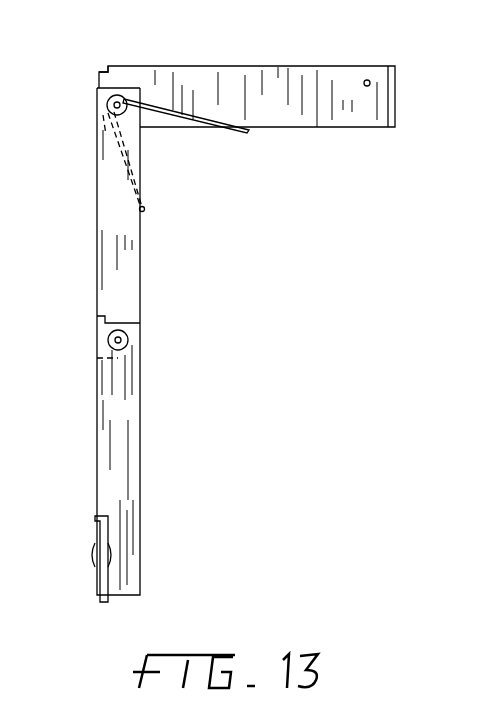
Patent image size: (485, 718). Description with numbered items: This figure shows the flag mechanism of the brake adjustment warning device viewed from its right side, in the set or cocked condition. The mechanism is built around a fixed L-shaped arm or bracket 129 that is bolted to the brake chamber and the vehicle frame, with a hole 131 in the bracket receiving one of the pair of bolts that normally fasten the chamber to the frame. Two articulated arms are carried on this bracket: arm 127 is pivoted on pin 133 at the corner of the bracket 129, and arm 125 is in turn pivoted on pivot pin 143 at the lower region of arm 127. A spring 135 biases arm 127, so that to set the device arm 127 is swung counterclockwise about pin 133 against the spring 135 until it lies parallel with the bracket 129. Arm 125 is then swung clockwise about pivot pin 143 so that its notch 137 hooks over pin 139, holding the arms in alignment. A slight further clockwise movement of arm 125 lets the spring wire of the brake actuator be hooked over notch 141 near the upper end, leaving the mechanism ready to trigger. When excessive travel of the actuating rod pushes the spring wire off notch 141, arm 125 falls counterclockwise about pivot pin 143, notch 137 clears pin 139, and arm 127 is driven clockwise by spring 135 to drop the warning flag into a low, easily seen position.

The arm 125 is at (127, 467).
The arm 127 is at (123, 260).
The L-shaped arm or bracket 129 is at (197, 88).
The hole 131 is at (395, 98).
The pin 133 is at (107, 105).
The spring 135 is at (192, 128).
The notch 137 is at (106, 321).
The pin 139 is at (367, 80).
The notch 141 is at (101, 72).
The pivot pin 143 is at (121, 340).